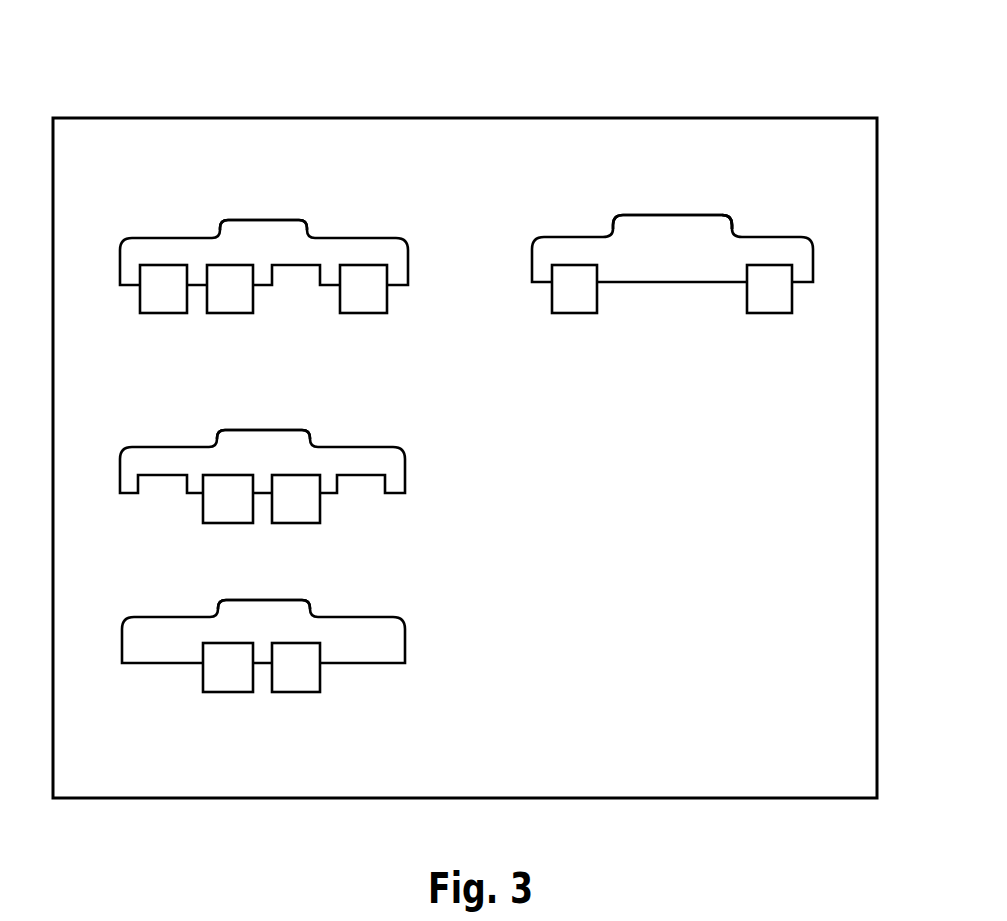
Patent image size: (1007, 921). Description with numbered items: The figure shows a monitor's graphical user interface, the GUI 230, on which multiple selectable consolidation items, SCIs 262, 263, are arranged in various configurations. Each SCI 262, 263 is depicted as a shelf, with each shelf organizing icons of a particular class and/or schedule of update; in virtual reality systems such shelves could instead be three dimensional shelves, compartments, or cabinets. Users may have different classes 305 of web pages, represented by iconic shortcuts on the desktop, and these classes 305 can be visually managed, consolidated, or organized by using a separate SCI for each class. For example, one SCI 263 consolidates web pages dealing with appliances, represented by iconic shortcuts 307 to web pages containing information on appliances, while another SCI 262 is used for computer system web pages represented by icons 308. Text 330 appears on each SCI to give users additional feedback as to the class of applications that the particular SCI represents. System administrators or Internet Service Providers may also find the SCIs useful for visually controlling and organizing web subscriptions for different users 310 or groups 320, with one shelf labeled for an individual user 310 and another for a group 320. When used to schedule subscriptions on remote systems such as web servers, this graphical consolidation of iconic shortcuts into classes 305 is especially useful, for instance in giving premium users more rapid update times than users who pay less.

The GUI 230 is at (327, 114).
The SCI 262 is at (640, 294).
The SCI 263 is at (412, 242).
The class 305 is at (236, 240).
The iconic shortcut 307 is at (167, 314).
The icon 308 is at (225, 693).
The user 310 is at (258, 440).
The group 320 is at (726, 214).
The text 330 is at (277, 234).